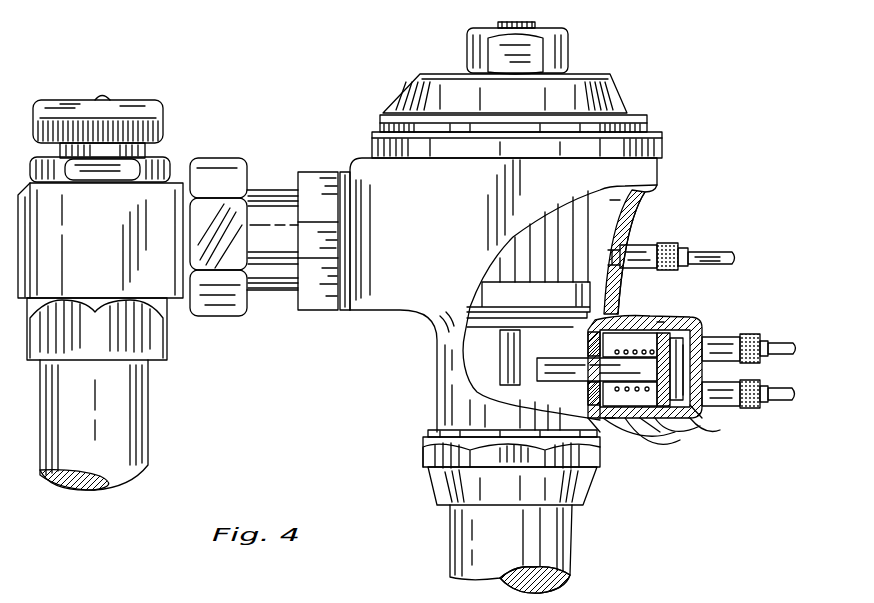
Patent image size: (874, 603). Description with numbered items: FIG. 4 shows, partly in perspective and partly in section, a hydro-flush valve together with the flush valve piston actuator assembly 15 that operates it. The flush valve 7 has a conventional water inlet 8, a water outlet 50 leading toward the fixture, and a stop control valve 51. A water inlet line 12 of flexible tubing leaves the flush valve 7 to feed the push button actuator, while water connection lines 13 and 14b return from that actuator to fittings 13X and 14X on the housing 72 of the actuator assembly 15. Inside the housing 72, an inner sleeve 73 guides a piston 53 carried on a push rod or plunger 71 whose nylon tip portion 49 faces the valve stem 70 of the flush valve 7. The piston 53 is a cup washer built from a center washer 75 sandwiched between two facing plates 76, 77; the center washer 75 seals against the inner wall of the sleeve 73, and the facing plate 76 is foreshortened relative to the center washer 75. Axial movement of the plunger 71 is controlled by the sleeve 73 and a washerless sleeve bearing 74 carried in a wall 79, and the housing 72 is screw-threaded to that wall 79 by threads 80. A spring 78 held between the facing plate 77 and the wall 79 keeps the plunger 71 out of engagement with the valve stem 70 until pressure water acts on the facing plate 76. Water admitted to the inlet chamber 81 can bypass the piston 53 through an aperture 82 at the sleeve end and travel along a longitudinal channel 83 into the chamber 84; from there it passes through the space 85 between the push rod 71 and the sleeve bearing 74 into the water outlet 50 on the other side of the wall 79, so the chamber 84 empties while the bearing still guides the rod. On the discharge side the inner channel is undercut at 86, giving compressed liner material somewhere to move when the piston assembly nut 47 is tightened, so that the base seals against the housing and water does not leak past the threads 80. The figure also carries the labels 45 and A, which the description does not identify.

The flush valve 7 is at (443, 352).
The water inlet 8 is at (147, 441).
The water inlet line 12 is at (706, 250).
The water connection line 13 is at (790, 340).
The fitting 13X is at (735, 345).
The water connection line 14b is at (780, 403).
The fitting 14X is at (727, 379).
The flush valve piston actuator assembly 15 is at (626, 440).
The body wall 45 is at (615, 313).
The piston assembly nut 47 is at (645, 432).
The nylon tip portion 49 is at (530, 357).
The water outlet 50 is at (467, 535).
The stop control valve 51 is at (176, 180).
The piston 53 is at (668, 325).
The valve stem 70 is at (500, 378).
The push rod or plunger 71 is at (562, 364).
The housing 72 is at (697, 415).
The inner sleeve 73 is at (660, 428).
The washerless sleeve bearing 74 is at (622, 327).
The center washer 75 is at (668, 432).
The facing plate 76 is at (684, 327).
The facing plate 77 is at (659, 318).
The spring 78 is at (613, 428).
The wall 79 is at (586, 409).
The threads 80 is at (606, 455).
The inlet chamber 81 is at (722, 335).
The aperture or opening 82 is at (690, 424).
The longitudinal channel 83 is at (698, 420).
The chamber 84 is at (586, 393).
The space 85 is at (655, 450).
The undercut 86 is at (575, 320).
The detail area A is at (707, 427).